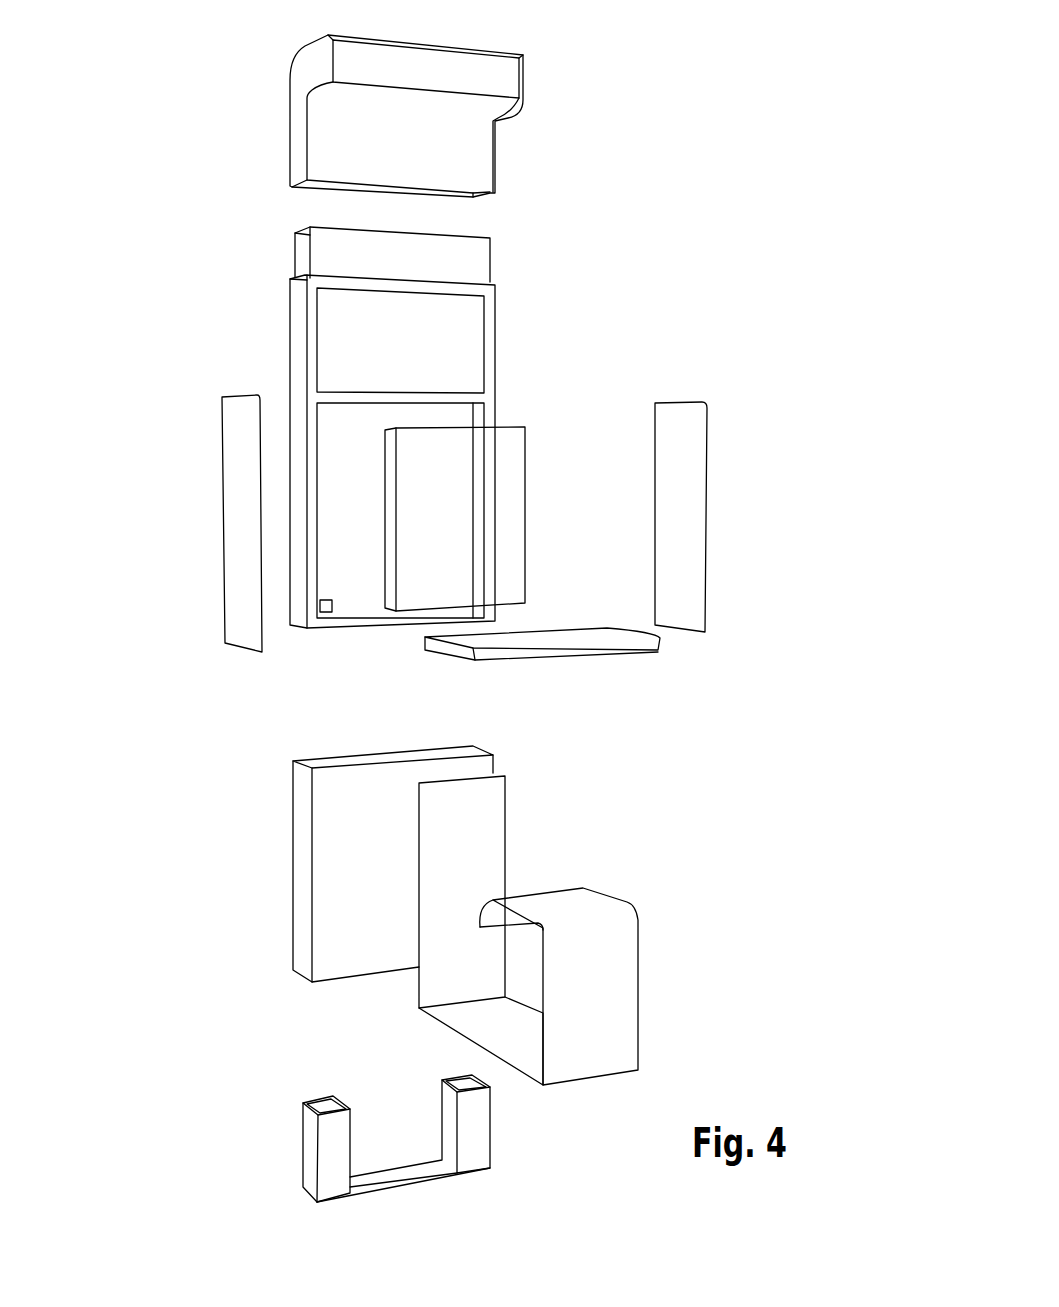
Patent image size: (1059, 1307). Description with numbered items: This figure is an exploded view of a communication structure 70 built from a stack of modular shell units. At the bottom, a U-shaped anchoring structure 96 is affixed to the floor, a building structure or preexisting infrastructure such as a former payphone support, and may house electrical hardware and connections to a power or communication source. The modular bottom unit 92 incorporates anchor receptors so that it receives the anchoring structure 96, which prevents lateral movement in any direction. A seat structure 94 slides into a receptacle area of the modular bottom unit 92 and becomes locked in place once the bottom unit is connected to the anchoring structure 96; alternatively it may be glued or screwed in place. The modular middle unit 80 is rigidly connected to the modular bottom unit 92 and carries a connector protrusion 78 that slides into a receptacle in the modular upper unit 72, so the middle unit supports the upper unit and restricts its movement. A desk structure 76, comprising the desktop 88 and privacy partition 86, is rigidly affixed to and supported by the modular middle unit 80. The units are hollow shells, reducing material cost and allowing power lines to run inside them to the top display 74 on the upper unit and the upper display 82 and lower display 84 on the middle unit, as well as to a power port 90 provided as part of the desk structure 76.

The communication structure 70 is at (697, 105).
The modular upper unit 72 is at (290, 163).
The top display 74 is at (363, 70).
The desk structure 76 is at (720, 663).
The connector protrusion 78 is at (333, 253).
The modular middle unit 80 is at (290, 350).
The upper display 82 is at (425, 345).
The lower display 84 is at (480, 497).
The privacy partition 86 is at (682, 495).
The desktop 88 is at (562, 647).
The power port 90 is at (326, 608).
The modular bottom unit 92 is at (293, 870).
The seat structure 94 is at (638, 1007).
The anchoring structure 96 is at (303, 1148).